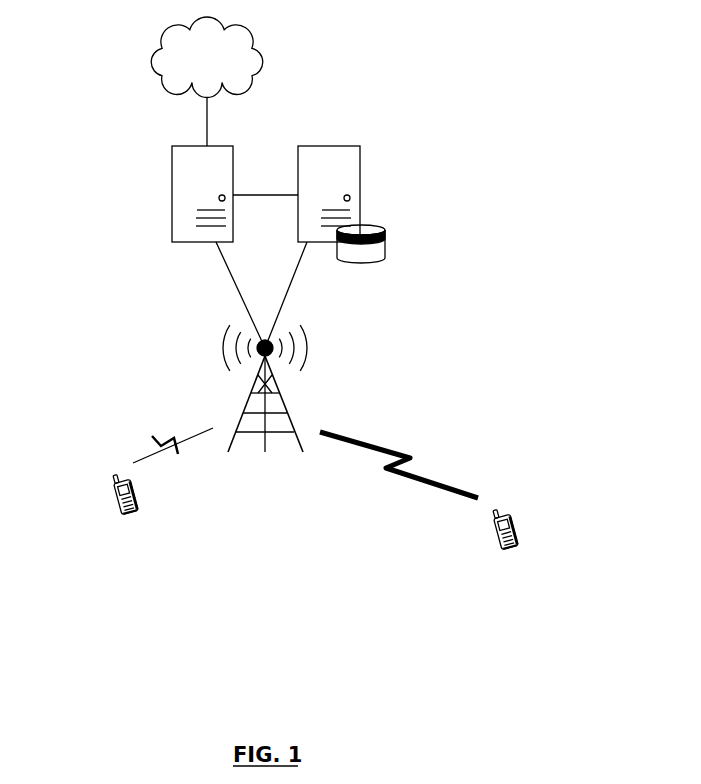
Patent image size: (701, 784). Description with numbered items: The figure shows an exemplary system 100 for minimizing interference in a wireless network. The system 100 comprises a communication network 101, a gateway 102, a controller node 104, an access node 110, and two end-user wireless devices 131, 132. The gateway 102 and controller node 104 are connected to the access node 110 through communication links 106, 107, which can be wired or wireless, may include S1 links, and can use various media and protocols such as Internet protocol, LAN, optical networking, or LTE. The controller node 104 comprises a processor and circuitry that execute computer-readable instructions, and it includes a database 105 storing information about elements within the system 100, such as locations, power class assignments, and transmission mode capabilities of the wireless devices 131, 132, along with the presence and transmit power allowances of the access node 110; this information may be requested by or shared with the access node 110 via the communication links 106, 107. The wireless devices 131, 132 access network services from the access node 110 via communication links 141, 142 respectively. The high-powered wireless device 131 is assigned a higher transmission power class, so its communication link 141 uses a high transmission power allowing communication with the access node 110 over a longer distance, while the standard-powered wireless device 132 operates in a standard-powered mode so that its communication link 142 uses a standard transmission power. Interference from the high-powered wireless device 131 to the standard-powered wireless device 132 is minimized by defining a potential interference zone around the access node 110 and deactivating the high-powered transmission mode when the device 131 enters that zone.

The system 100 is at (320, 58).
The communication network 101 is at (191, 67).
The gateway 102 is at (172, 167).
The controller node 104 is at (360, 165).
The database 105 is at (382, 231).
The communication link 106 is at (233, 277).
The communication link 107 is at (297, 277).
The access node 110 is at (283, 413).
The high-powered wireless device 131 is at (507, 512).
The standard-powered wireless device 132 is at (113, 492).
The communication link 141 is at (410, 455).
The communication link 142 is at (152, 436).